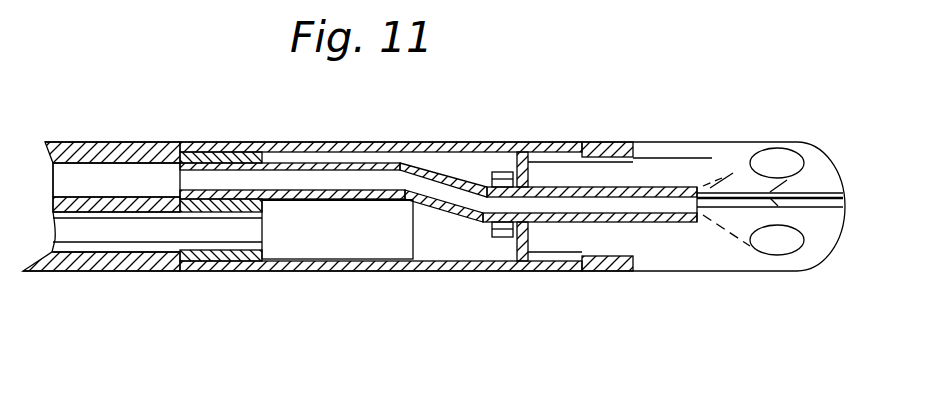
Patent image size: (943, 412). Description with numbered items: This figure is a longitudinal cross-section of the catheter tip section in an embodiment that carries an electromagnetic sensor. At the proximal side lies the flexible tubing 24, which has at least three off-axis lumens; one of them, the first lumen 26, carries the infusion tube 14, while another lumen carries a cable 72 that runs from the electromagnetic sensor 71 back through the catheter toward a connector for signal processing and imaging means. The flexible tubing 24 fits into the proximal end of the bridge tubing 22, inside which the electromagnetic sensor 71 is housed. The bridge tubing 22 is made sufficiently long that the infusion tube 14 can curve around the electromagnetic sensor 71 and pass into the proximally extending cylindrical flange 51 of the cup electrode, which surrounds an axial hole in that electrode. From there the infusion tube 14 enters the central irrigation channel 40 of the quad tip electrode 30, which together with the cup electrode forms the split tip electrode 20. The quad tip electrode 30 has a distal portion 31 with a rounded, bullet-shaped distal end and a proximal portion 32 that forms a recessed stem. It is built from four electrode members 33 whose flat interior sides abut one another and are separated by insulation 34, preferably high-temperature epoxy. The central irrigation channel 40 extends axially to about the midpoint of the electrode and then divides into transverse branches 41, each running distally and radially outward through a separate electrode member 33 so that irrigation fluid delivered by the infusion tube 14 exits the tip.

The infusion tube 14 is at (423, 162).
The split tip electrode 20 is at (768, 278).
The bridge tubing 22 is at (452, 272).
The flexible tubing 24 is at (85, 155).
The first lumen 26 is at (135, 175).
The quad tip electrode 30 is at (713, 285).
The distal portion 31 is at (670, 139).
The proximal portion 32 is at (613, 118).
The electrode members 33 is at (813, 180).
The insulation 34 is at (820, 205).
The central irrigation channel 40 is at (705, 213).
The transverse branches 41 is at (738, 185).
The cylindrical flange 51 is at (485, 230).
The electromagnetic sensor 71 is at (350, 237).
The cable 72 is at (172, 225).